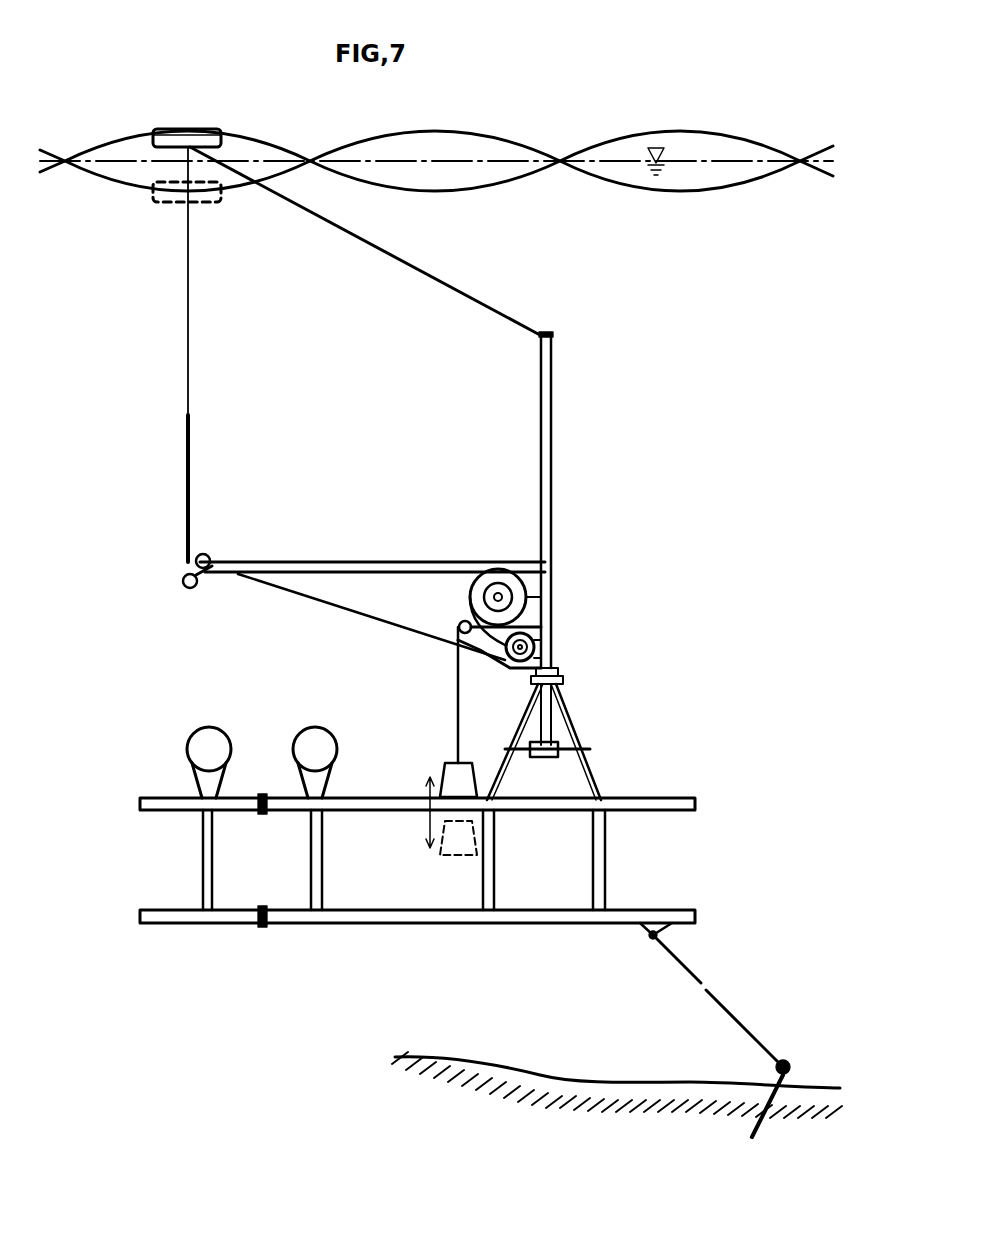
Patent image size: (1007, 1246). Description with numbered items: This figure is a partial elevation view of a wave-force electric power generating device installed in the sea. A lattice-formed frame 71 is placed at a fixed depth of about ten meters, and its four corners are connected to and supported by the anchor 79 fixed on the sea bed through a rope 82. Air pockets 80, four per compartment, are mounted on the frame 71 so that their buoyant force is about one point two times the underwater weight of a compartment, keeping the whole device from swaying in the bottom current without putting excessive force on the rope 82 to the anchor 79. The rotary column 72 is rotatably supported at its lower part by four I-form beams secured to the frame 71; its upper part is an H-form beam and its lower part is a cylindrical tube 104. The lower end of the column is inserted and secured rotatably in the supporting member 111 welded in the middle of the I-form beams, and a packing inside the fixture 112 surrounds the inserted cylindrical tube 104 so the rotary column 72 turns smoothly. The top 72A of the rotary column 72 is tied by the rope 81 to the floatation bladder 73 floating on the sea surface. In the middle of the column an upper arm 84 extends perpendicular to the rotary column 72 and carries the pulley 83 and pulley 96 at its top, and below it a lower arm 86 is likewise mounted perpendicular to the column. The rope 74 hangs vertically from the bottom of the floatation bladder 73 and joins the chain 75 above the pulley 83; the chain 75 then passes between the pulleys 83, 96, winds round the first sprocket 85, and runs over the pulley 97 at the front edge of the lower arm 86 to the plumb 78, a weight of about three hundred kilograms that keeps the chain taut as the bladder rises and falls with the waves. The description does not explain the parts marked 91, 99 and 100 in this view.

The lattice-formed frame 71 is at (670, 800).
The rotary column 72 is at (552, 450).
The top of the rotary column 72A is at (545, 335).
The floatation bladder 73 is at (188, 128).
The rope 74 is at (188, 295).
The chain 75 is at (188, 497).
The plumb 78 is at (445, 770).
The anchor 79 is at (790, 1065).
The air pockets 80 is at (220, 737).
The rope 81 is at (470, 296).
The rope 82 is at (727, 1008).
The pulley 83 is at (205, 556).
The upper arm 84 is at (340, 560).
The first sprocket 85 is at (498, 569).
The lower arm 86 is at (552, 625).
The drum axle 91 is at (553, 661).
The pulley 96 is at (183, 582).
The pulley 97 is at (465, 621).
The pulley bracket 99 is at (548, 565).
The drum bracket 100 is at (553, 642).
The cylindrical tube 104 is at (545, 707).
The supporting member 111 is at (575, 758).
The fixture 112 is at (548, 740).